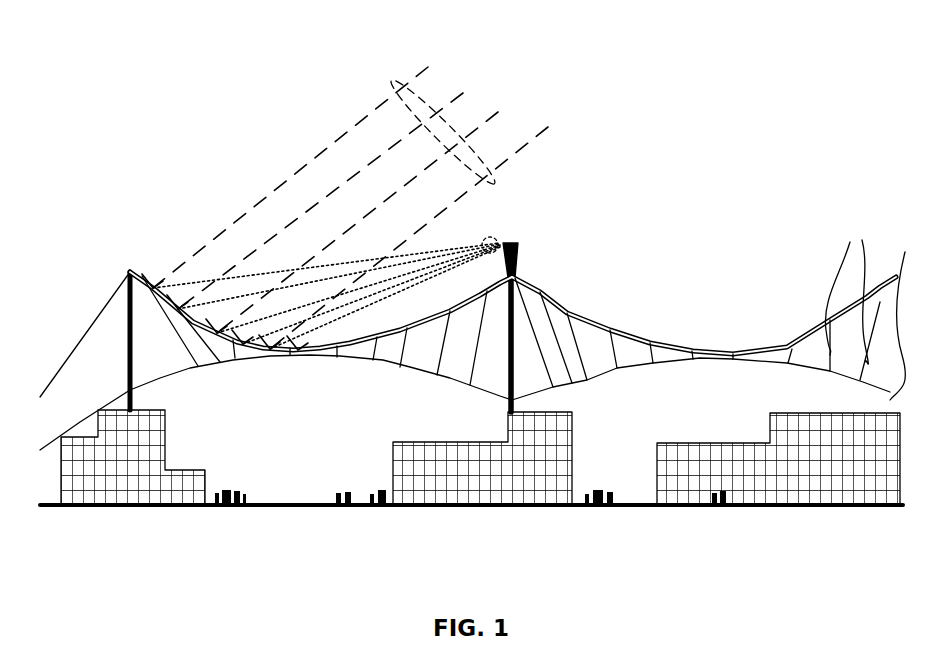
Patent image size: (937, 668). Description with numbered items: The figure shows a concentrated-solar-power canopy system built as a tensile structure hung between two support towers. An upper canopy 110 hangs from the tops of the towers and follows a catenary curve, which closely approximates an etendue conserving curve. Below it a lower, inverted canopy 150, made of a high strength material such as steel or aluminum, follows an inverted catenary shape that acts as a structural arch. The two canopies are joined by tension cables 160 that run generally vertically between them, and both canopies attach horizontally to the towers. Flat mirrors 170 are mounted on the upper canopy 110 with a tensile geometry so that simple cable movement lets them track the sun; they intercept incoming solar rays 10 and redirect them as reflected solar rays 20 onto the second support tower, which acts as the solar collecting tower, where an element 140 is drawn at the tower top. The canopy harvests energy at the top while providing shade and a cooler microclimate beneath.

The incoming solar rays 10 is at (394, 87).
The reflected solar rays 20 is at (488, 246).
The upper canopy 110 is at (112, 372).
The receiver 140 is at (516, 262).
The lower canopy 150 is at (193, 343).
The tension cables 160 is at (517, 330).
The flat mirrors 170 is at (168, 285).